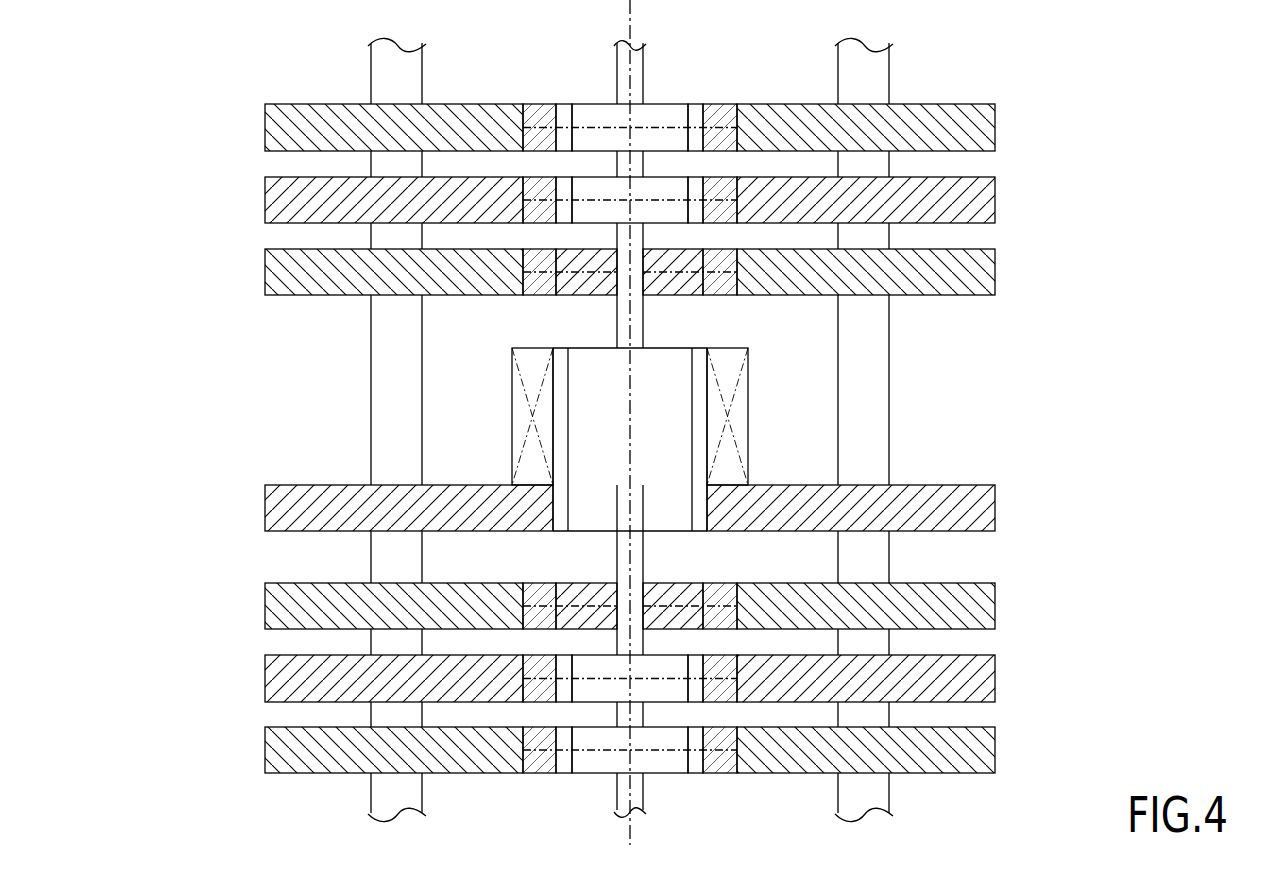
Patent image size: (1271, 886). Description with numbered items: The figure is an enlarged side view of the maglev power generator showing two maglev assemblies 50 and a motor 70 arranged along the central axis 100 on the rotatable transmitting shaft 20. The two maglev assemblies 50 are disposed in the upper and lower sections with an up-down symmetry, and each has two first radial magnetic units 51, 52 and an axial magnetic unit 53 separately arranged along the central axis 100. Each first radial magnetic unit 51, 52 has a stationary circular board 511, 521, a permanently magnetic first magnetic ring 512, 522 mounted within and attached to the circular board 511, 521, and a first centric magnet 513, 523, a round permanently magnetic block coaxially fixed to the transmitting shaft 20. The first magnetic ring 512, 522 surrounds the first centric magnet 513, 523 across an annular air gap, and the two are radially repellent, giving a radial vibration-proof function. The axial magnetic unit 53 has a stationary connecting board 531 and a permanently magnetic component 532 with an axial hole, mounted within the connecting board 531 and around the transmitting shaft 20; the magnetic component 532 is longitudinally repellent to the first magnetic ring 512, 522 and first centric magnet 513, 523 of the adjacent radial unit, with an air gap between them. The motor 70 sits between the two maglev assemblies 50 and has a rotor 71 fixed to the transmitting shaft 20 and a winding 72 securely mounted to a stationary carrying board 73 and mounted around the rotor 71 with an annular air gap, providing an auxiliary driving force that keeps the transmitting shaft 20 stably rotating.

The central axis 100 is at (630, 21).
The transmitting shaft 20 is at (643, 320).
The maglev assembly 50 is at (543, 432).
The first radial magnetic unit 51 is at (589, 432).
The circular board 511 is at (309, 104).
The first magnetic ring 512 is at (540, 102).
The first centric magnet 513 is at (672, 102).
The first radial magnetic unit 52 is at (587, 375).
The circular board 521 is at (305, 177).
The first magnetic ring 522 is at (531, 171).
The first centric magnet 523 is at (687, 172).
The axial magnetic unit 53 is at (589, 418).
The connecting board 531 is at (296, 292).
The magnetic component 532 is at (538, 296).
The motor 70 is at (638, 429).
The rotor 71 is at (676, 345).
The winding 72 is at (751, 418).
The carrying board 73 is at (955, 490).